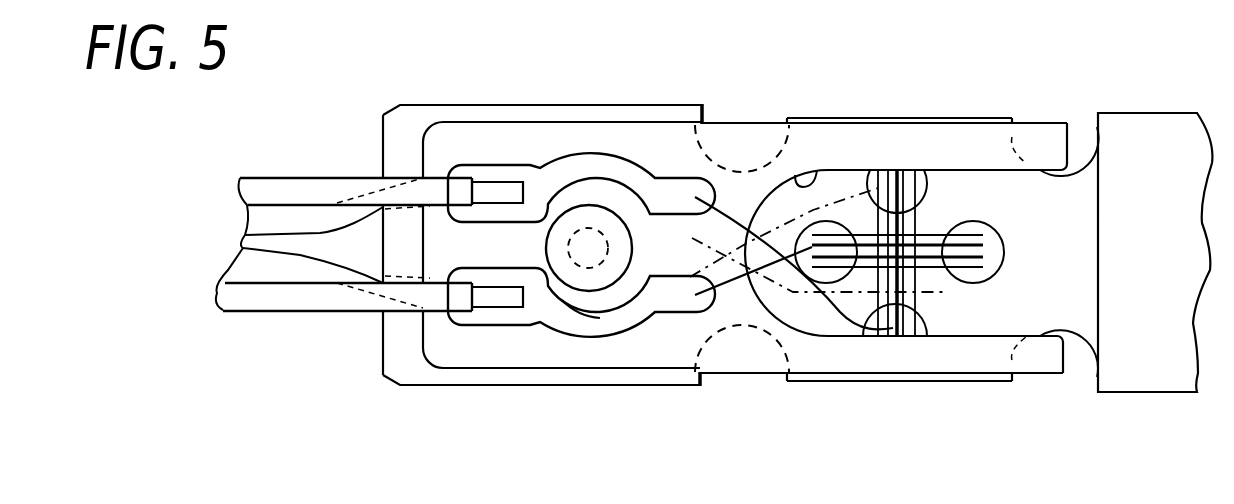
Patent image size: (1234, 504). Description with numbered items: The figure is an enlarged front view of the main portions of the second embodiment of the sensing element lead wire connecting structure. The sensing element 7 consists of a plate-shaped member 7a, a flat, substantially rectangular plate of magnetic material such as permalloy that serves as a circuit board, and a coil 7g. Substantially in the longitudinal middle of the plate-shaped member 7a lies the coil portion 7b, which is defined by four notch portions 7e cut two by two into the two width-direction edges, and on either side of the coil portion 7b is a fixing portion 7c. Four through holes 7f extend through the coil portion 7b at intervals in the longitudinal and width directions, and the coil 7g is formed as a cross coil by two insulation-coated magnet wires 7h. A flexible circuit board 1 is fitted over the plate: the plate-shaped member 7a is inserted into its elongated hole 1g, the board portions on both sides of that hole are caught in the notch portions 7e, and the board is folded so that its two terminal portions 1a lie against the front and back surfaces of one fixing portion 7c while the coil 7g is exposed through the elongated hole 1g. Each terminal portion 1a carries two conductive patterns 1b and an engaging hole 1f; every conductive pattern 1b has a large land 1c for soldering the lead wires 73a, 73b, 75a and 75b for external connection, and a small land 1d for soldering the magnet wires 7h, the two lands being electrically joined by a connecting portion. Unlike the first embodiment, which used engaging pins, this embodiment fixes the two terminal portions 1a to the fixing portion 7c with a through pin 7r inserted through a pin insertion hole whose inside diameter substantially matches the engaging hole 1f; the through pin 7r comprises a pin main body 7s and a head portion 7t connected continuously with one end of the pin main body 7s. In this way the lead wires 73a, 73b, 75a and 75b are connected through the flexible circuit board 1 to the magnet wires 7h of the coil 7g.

The flexible circuit board 1 is at (750, 373).
The terminal portion 1a is at (507, 133).
The conductive pattern 1b is at (613, 155).
The large land 1c is at (480, 168).
The small land 1d is at (662, 187).
The engaging hole 1f is at (576, 225).
The elongated hole 1g is at (800, 173).
The sensing element 7 is at (553, 107).
The plate-shaped member 7a is at (532, 386).
The coil portion 7b is at (890, 122).
The fixing portion 7c is at (407, 112).
The notch portion 7e is at (707, 117).
The through hole 7f is at (973, 222).
The coil 7g is at (863, 223).
The magnet wire 7h is at (935, 275).
The through pin 7r is at (576, 289).
The pin main body 7s is at (612, 251).
The head portion 7t is at (547, 238).
The lead wire 73a is at (322, 190).
The lead wire 73b is at (323, 297).
The lead wire 75a is at (262, 270).
The lead wire 75b is at (268, 222).